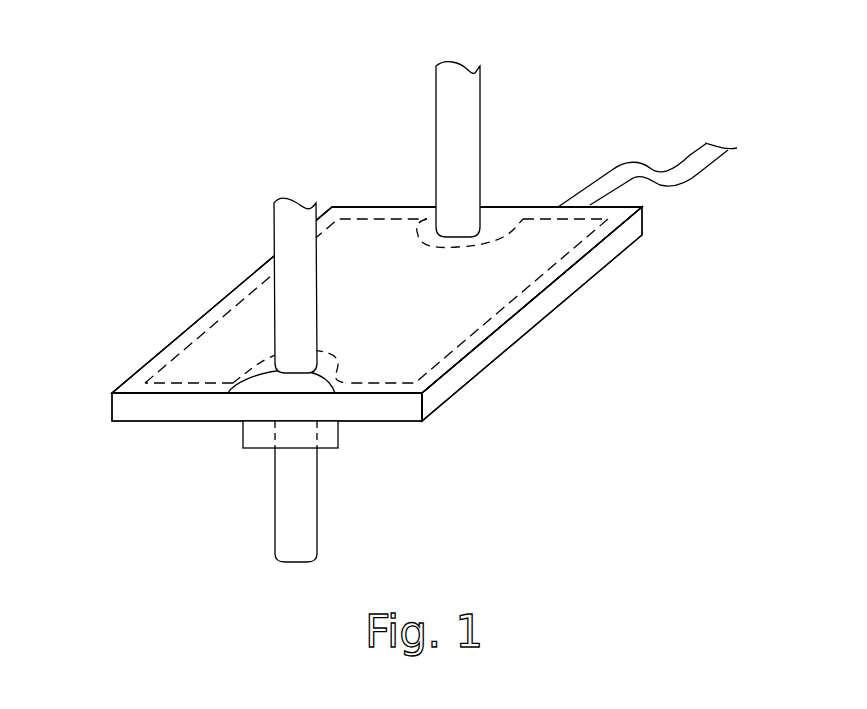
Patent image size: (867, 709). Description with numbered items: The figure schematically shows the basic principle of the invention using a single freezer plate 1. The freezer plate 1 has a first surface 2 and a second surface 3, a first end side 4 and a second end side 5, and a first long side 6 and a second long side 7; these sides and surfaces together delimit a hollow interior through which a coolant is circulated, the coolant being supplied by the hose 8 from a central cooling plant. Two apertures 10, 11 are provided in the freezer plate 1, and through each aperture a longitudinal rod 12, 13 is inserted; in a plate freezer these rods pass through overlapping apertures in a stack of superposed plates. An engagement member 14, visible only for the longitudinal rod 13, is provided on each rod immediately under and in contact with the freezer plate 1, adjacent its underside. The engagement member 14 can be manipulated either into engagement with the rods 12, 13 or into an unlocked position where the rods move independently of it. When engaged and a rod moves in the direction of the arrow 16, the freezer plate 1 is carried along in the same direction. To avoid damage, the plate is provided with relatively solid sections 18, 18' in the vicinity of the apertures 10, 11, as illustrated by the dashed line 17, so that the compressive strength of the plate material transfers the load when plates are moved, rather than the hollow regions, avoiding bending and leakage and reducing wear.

The freezer plate 1 is at (533, 365).
The first surface 2 is at (432, 322).
The second surface 3 is at (590, 332).
The first end side 4 is at (127, 410).
The second end side 5 is at (540, 190).
The first long side 6 is at (438, 393).
The second long side 7 is at (150, 344).
The hose 8 is at (670, 163).
The aperture 10 is at (440, 233).
The aperture 11 is at (335, 393).
The longitudinal rod 12 is at (465, 105).
The longitudinal rod 13 is at (262, 214).
The engagement member 14 is at (258, 437).
The arrow 16 is at (296, 158).
The dashed line 17 is at (573, 242).
The solid section 18 is at (247, 430).
The solid section 18' is at (488, 181).